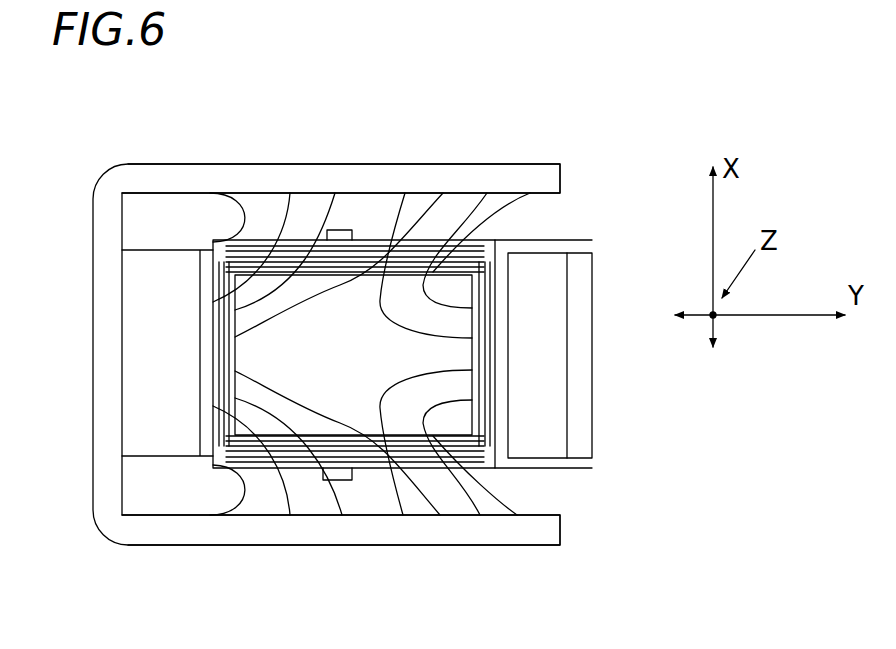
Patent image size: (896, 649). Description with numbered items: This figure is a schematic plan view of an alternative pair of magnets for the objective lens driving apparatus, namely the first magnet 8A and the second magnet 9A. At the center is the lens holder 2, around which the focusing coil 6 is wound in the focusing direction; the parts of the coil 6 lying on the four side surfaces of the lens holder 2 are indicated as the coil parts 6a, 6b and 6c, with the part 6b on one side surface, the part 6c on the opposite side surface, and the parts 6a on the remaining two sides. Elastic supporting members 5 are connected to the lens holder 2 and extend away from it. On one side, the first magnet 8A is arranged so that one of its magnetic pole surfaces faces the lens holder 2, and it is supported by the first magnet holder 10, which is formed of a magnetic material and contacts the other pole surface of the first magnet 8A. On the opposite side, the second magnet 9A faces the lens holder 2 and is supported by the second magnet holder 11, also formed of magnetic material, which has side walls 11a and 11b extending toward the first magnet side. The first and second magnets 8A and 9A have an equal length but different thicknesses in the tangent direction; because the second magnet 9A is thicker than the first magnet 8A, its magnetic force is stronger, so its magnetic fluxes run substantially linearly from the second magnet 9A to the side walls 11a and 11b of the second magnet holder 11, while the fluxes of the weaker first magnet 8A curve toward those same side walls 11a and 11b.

The second magnet holder 11 is at (160, 161).
The side wall of the second magnet holder 11a is at (319, 172).
The side wall of the second magnet holder 11b is at (343, 533).
The second magnet 9A is at (142, 308).
The focusing coil 6 is at (259, 458).
The lens holder 2 is at (305, 345).
The part of the focusing coil 6a is at (205, 360).
The part of the focusing coil 6b is at (380, 250).
The part of the focusing coil 6c is at (418, 512).
The elastic supporting member 5 is at (578, 240).
The first magnet 8A is at (540, 268).
The first magnet holder 10 is at (582, 422).